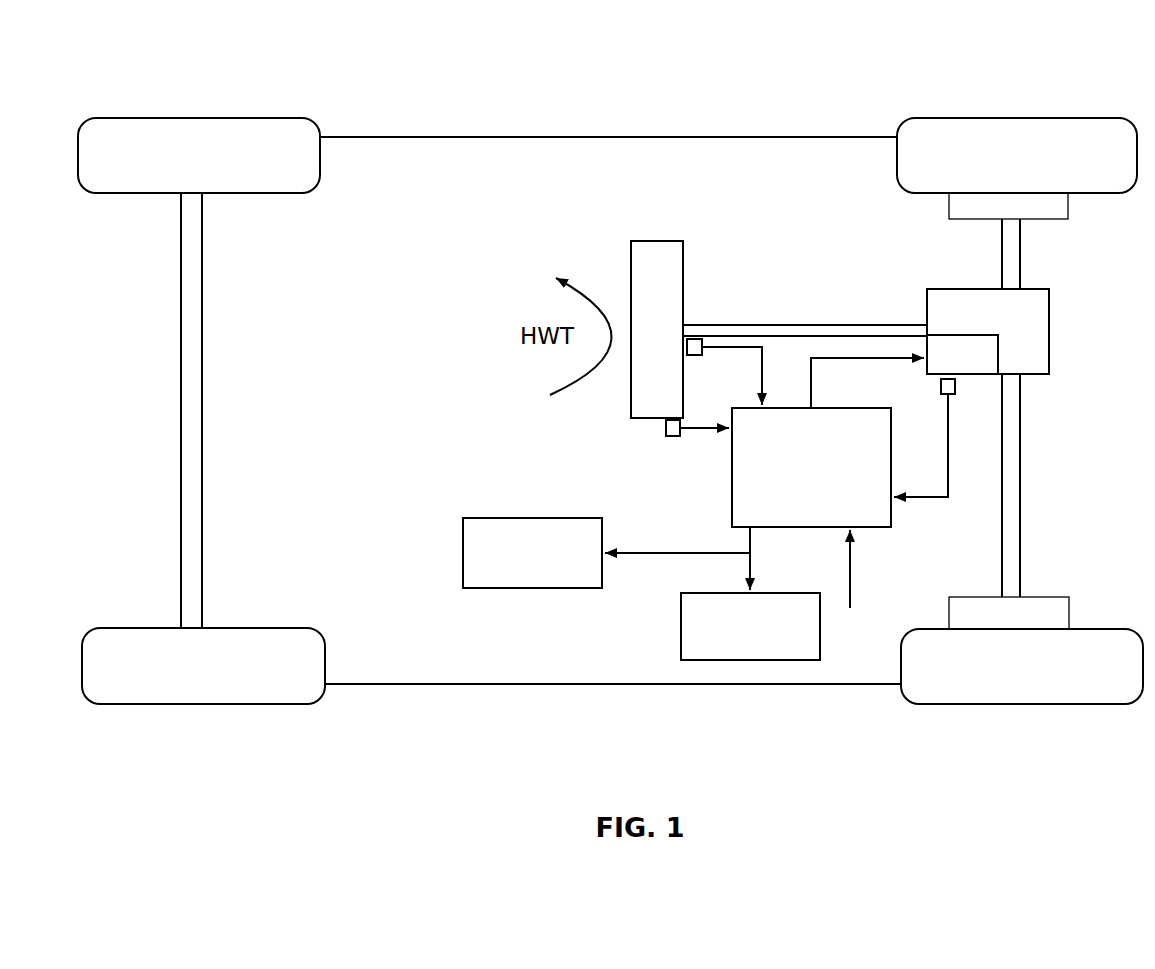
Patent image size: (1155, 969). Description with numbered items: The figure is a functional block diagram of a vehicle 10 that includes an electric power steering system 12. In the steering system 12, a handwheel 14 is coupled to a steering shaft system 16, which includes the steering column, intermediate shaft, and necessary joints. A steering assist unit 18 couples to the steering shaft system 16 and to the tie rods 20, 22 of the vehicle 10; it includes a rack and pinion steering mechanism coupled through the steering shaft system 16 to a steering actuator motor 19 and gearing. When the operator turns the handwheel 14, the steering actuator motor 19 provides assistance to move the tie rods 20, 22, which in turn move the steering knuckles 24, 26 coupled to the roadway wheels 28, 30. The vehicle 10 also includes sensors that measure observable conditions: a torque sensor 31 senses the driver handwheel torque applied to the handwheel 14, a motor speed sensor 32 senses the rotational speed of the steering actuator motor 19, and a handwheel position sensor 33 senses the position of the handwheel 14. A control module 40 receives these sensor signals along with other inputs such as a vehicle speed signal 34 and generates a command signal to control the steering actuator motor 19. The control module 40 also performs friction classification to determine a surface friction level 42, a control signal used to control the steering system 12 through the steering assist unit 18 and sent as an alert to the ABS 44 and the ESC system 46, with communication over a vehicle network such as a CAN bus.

The vehicle 10 is at (653, 38).
The steering system 12 is at (771, 220).
The handwheel 14 is at (658, 241).
The steering shaft system 16 is at (775, 325).
The steering assist unit 18 is at (1049, 330).
The steering actuator motor 19 is at (962, 354).
The tie rod 20 is at (1021, 266).
The tie rod 22 is at (1021, 459).
The steering knuckle 24 is at (949, 198).
The steering knuckle 26 is at (980, 597).
The roadway wheel 28 is at (1060, 118).
The roadway wheel 30 is at (1079, 629).
The torque sensor 31 is at (693, 357).
The motor speed sensor 32 is at (953, 394).
The handwheel position sensor 33 is at (668, 437).
The vehicle speed signal 34 is at (849, 586).
The control module 40 is at (826, 408).
The surface friction level 42 is at (753, 573).
The ABS 44 is at (472, 518).
The ESC system 46 is at (681, 628).